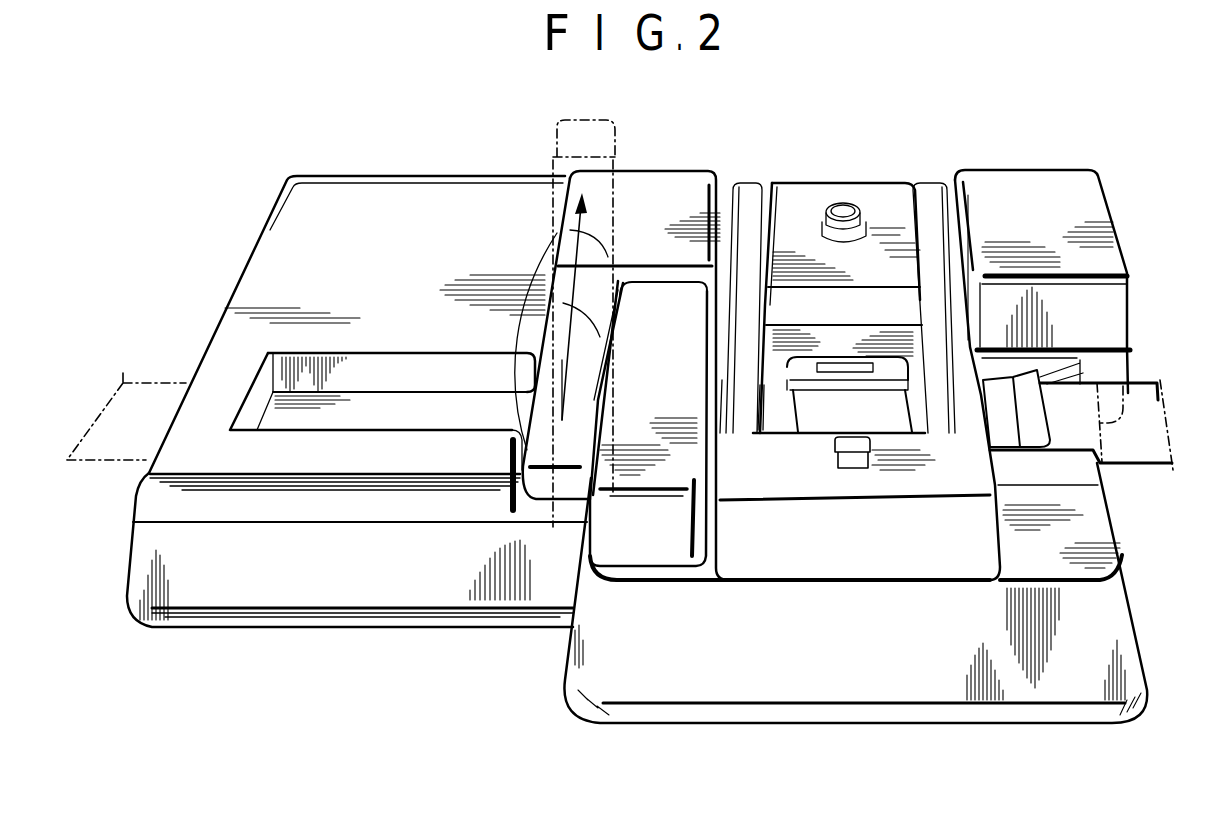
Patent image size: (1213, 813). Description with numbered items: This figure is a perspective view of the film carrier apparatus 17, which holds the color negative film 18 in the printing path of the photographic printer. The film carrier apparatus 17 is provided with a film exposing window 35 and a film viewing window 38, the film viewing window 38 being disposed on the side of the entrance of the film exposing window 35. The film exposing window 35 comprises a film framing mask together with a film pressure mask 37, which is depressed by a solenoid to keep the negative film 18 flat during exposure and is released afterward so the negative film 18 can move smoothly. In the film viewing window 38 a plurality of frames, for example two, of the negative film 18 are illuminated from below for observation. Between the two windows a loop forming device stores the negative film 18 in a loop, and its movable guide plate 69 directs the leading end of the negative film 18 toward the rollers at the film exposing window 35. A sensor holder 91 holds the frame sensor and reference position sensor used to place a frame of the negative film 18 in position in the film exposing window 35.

The film carrier apparatus 17 is at (616, 729).
The negative film 18 is at (155, 397).
The film exposing window 35 is at (826, 422).
The film pressure mask 37 is at (802, 415).
The film viewing window 38 is at (389, 400).
The movable guide plate 69 is at (552, 470).
The sensor holder 91 is at (648, 470).